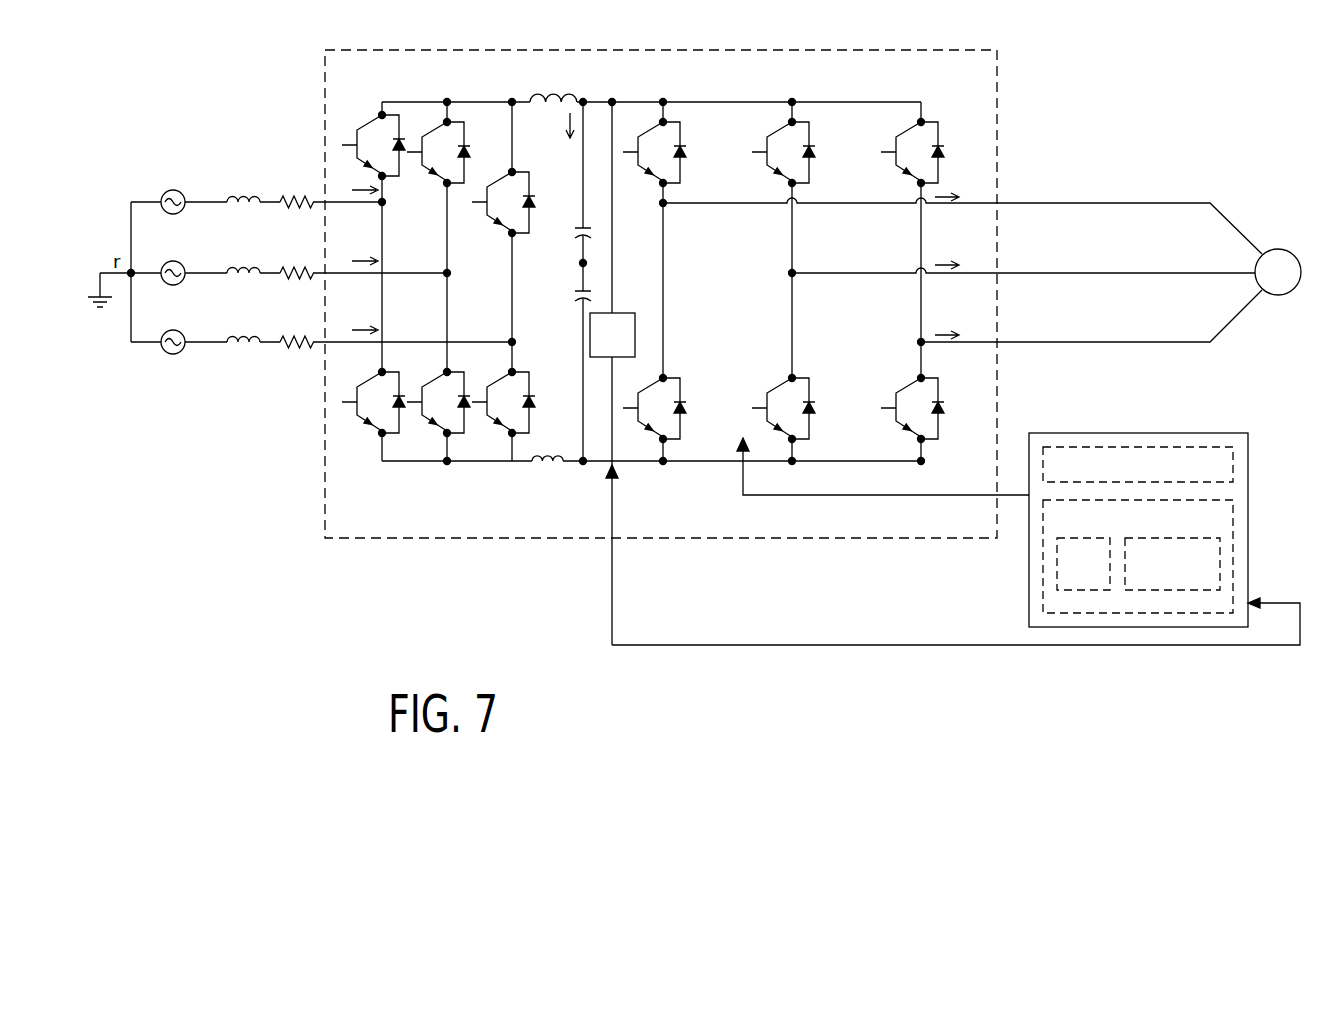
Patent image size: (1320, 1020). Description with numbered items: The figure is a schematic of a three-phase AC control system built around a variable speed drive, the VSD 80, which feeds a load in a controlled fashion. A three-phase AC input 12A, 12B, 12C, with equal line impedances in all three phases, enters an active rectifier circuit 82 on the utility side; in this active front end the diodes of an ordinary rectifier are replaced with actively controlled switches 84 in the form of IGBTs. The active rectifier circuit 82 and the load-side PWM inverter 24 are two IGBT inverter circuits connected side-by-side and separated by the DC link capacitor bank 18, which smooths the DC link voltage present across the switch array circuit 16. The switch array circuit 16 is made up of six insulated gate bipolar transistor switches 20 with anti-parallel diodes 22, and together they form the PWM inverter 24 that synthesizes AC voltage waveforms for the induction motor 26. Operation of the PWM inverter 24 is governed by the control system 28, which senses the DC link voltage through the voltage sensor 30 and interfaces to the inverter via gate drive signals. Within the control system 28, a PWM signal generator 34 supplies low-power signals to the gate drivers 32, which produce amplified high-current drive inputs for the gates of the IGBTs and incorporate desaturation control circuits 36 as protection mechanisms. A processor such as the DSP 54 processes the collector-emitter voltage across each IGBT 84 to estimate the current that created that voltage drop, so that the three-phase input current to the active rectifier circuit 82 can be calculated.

The three-phase AC input 12A is at (183, 211).
The three-phase AC input 12B is at (183, 282).
The three-phase AC input 12C is at (183, 351).
The switch array circuit 16 is at (716, 476).
The DC link capacitor bank 18 is at (596, 295).
The insulated gate bipolar transistor switch 20 is at (624, 151).
The anti-parallel diode 22 is at (684, 150).
The PWM inverter 24 is at (747, 324).
The induction motor 26 is at (1281, 250).
The control system 28 is at (1166, 530).
The voltage sensor 30 is at (636, 338).
The gate drivers 32 is at (1237, 517).
The PWM signal generator 34 is at (1237, 462).
The desaturation control circuits 36 is at (1168, 538).
The DSP 54 is at (1080, 538).
The VSD 80 is at (997, 75).
The active rectifier circuit 82 is at (396, 478).
The actively controlled switches 84 is at (447, 121).